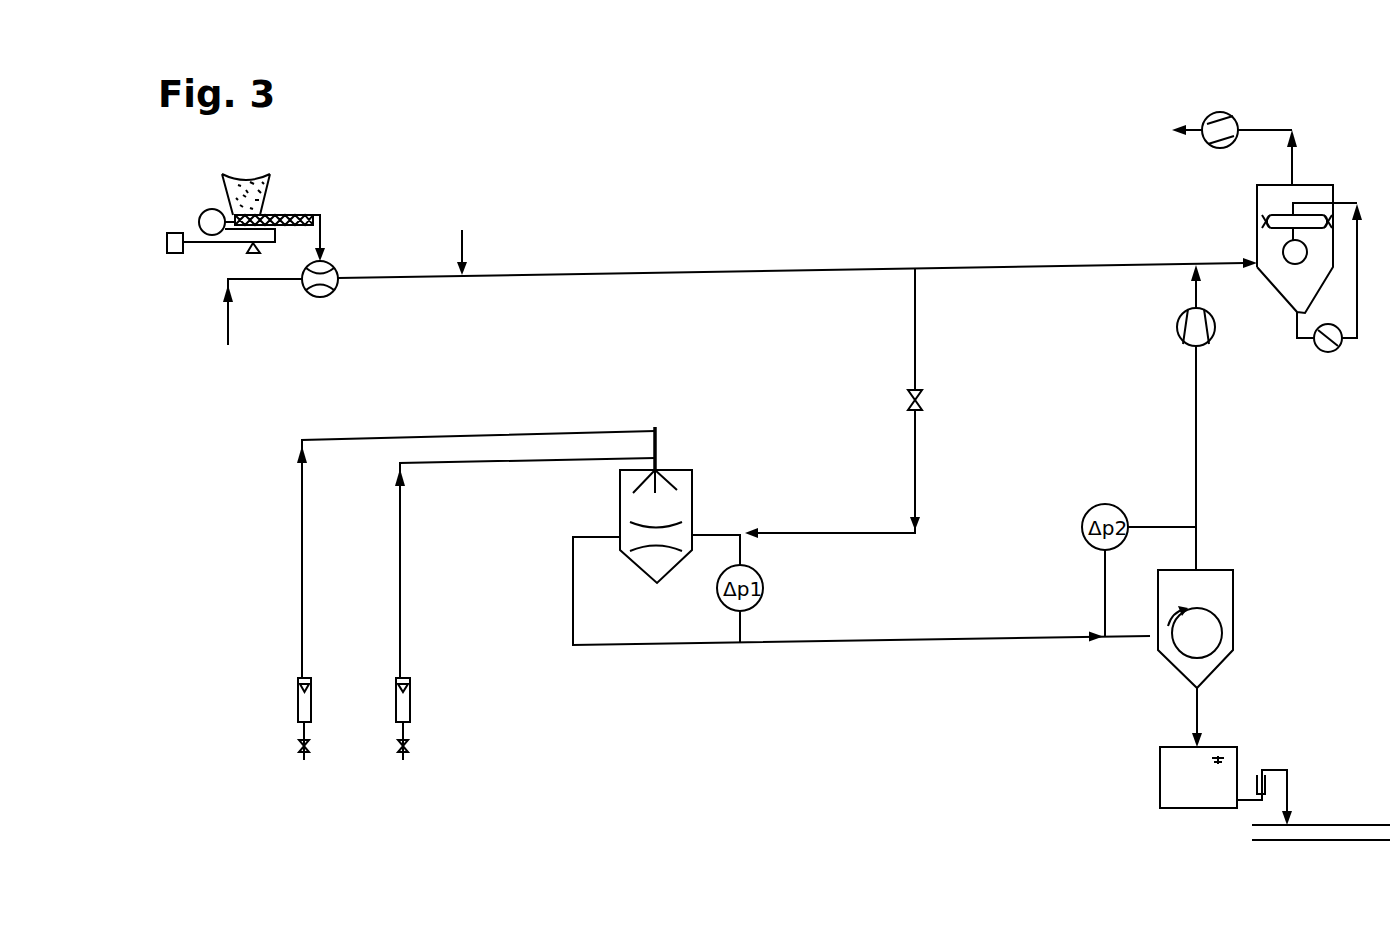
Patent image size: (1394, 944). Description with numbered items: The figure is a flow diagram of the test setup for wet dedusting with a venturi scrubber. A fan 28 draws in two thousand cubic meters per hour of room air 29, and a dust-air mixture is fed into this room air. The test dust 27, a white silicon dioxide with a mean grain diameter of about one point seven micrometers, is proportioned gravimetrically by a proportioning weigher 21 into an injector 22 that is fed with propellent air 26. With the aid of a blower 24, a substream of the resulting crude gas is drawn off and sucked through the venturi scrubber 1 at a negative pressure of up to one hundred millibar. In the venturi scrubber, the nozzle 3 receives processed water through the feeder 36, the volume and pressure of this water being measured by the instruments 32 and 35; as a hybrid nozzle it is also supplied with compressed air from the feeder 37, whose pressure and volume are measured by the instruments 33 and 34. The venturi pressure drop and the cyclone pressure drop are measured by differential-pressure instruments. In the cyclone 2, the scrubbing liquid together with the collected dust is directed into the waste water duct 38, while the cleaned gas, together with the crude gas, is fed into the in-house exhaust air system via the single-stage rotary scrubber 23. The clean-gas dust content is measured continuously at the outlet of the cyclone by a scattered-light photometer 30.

The venturi scrubber 1 is at (692, 488).
The cyclone 2 is at (1223, 570).
The nozzle 3 is at (656, 470).
The proportioning weigher 21 is at (212, 247).
The injector 22 is at (324, 297).
The single-stage rotary scrubber 23 is at (1313, 185).
The blower 24 is at (1177, 327).
The propellent air 26 is at (232, 312).
The test dust 27 is at (250, 170).
The fan 28 is at (1219, 148).
The room air 29 is at (464, 238).
The scattered-light photometer 30 is at (1196, 410).
The instrument 32 is at (410, 702).
The instrument 33 is at (302, 612).
The instrument 34 is at (298, 708).
The instrument 35 is at (400, 598).
The feeder 36 is at (400, 548).
The feeder 37 is at (302, 478).
The waste water duct 38 is at (1345, 826).